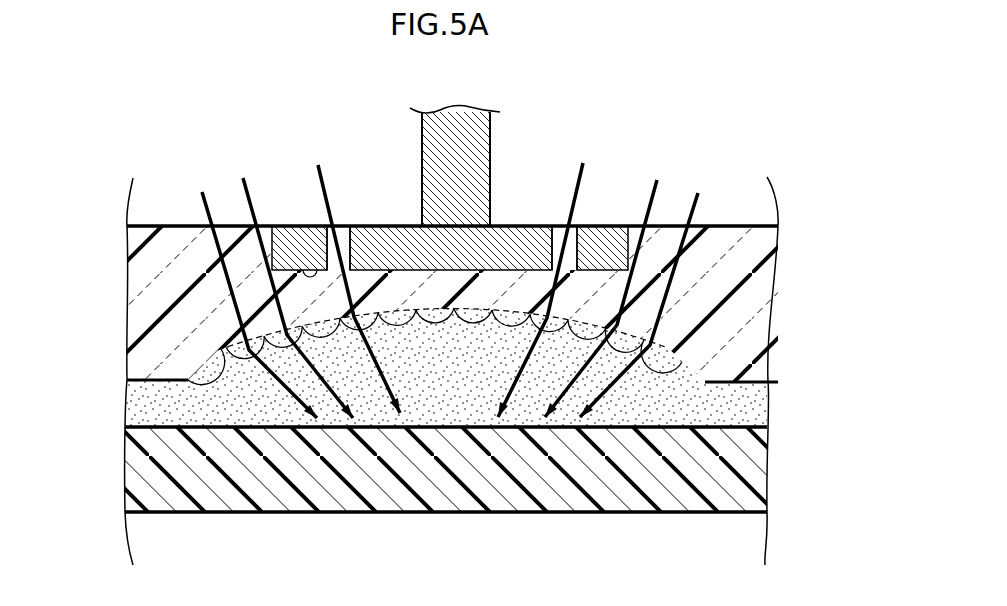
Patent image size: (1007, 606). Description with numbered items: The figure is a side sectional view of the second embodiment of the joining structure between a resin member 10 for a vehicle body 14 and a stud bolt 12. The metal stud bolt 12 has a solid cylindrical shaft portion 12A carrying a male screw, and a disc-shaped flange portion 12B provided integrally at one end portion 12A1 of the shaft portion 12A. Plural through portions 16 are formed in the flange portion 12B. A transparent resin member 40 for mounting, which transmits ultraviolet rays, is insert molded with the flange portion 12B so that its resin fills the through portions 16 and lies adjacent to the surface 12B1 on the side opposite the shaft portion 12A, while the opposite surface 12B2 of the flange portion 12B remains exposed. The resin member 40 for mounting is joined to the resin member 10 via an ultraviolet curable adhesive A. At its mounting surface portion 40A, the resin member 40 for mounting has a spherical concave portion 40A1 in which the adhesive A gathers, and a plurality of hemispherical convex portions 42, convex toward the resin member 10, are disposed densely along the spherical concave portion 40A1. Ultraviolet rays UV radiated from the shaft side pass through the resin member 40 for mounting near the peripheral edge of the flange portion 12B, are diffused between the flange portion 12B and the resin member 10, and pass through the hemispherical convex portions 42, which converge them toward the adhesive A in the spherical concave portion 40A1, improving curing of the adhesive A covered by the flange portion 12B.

The resin member for a vehicle body 10 is at (446, 502).
The vehicle body 14 is at (415, 505).
The stud bolt 12 is at (429, 171).
The shaft portion 12A is at (494, 138).
The one end portion 12A1 is at (470, 212).
The flange portion 12B is at (622, 218).
The surface 12B1 is at (305, 226).
The surface 12B2 is at (383, 224).
The through portions 16 is at (341, 226).
The resin member for mounting 40 is at (735, 184).
The mounting surface portion 40A is at (753, 386).
The spherical concave portion 40A1 is at (190, 404).
The hemispherical convex portions 42 is at (323, 333).
The ultraviolet curable adhesive A is at (758, 416).
The ultraviolet rays UV is at (202, 200).